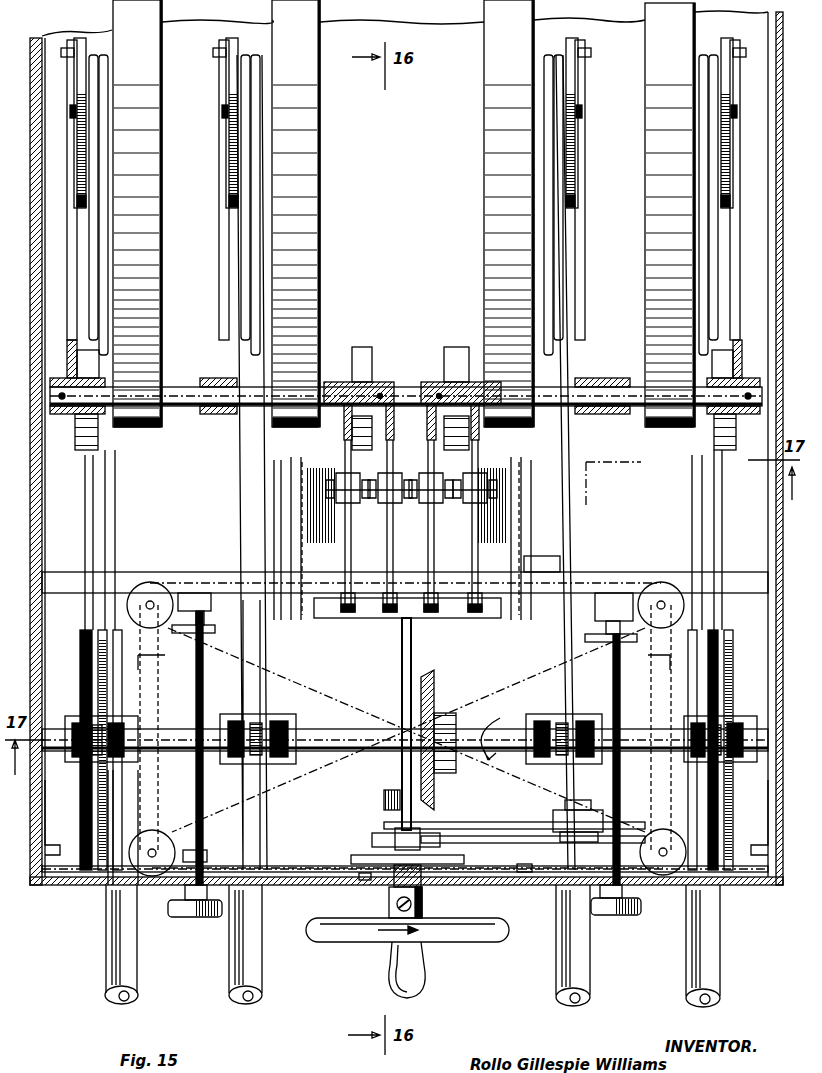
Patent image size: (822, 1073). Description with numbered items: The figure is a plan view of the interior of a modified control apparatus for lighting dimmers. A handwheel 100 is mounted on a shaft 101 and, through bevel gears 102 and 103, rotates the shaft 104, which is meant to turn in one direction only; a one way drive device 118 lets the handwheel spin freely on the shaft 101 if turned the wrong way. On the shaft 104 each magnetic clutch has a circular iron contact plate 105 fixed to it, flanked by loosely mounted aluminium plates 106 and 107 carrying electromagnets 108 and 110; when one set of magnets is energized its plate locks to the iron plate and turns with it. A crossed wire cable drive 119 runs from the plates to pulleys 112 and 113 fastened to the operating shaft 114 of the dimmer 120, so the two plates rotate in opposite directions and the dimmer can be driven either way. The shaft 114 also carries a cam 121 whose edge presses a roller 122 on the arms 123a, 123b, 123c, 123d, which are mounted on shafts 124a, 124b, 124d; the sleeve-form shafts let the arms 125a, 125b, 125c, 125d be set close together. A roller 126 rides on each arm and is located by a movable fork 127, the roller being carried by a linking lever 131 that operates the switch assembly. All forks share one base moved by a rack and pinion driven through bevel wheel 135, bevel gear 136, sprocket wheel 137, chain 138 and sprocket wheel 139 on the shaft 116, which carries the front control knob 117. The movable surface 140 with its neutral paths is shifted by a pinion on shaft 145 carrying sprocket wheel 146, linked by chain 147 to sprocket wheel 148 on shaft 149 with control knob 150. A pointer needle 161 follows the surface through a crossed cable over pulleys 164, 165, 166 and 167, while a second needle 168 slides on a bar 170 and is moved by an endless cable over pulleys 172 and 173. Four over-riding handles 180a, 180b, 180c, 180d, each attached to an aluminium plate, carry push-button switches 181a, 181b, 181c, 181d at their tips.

The handwheel 100 is at (325, 940).
The shaft 101 is at (380, 852).
The bevel gear 102 is at (384, 797).
The bevel gear 103 is at (446, 668).
The shaft 104 is at (320, 735).
The circular iron contact plate 105 is at (106, 852).
The circular plate 106 is at (78, 832).
The circular plate 107 is at (125, 797).
The electromagnet 108 is at (78, 718).
The electromagnet 110 is at (130, 718).
The pulley 112 is at (108, 78).
The pulley 113 is at (88, 55).
The operating shaft 114 is at (73, 114).
The shaft 116 is at (200, 810).
The control knob 117 is at (200, 917).
The one way drive device 118 is at (392, 897).
The wire cable drive 119 is at (84, 544).
The dimmer 120 is at (148, 134).
The cam 121 is at (80, 208).
The roller 122 is at (62, 33).
The arm 123a is at (74, 262).
The arm 123b is at (222, 283).
The arm 123c is at (580, 275).
The arm 123d is at (735, 328).
The shaft 124a is at (80, 418).
The shaft 124b is at (172, 386).
The shaft 124d is at (617, 386).
The arm 125a is at (398, 412).
The arm 125b is at (340, 418).
The arm 125c is at (476, 418).
The arm 125d is at (430, 450).
The roller 126 is at (390, 480).
The movable fork 127 is at (350, 476).
The linking lever 131 is at (402, 538).
The bevel wheel 135 is at (540, 558).
The bevel gear 136 is at (562, 565).
The chain sprocket wheel 137 is at (527, 634).
The chain 138 is at (418, 628).
The chain sprocket wheel 139 is at (200, 633).
The movable surface 140 is at (240, 574).
The shaft 145 is at (398, 664).
The chain sprocket wheel 146 is at (380, 834).
The chain 147 is at (488, 815).
The chain sprocket wheel 148 is at (600, 812).
The shaft 149 is at (620, 700).
The control knob 150 is at (604, 913).
The pointer needle 161 is at (356, 878).
The pulley 164 is at (133, 604).
The pulley 165 is at (132, 868).
The pulley 166 is at (676, 600).
The pulley 167 is at (665, 870).
The needle 168 is at (522, 875).
The bar 170 is at (308, 860).
The pulley 172 is at (205, 856).
The pulley 173 is at (624, 914).
The handle 180a is at (110, 965).
The handle 180b is at (240, 965).
The handle 180c is at (562, 965).
The handle 180d is at (690, 972).
The push-button switch 181a is at (118, 998).
The push-button switch 181b is at (242, 997).
The push-button switch 181c is at (567, 999).
The push-button switch 181d is at (692, 1001).